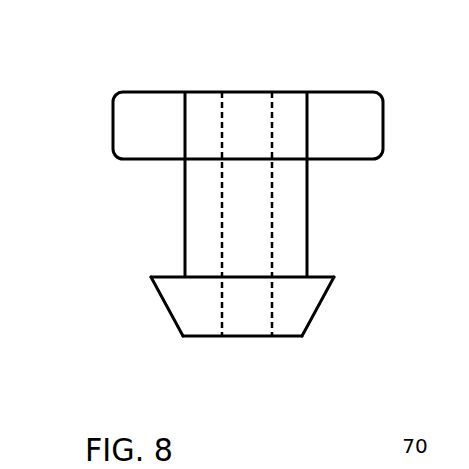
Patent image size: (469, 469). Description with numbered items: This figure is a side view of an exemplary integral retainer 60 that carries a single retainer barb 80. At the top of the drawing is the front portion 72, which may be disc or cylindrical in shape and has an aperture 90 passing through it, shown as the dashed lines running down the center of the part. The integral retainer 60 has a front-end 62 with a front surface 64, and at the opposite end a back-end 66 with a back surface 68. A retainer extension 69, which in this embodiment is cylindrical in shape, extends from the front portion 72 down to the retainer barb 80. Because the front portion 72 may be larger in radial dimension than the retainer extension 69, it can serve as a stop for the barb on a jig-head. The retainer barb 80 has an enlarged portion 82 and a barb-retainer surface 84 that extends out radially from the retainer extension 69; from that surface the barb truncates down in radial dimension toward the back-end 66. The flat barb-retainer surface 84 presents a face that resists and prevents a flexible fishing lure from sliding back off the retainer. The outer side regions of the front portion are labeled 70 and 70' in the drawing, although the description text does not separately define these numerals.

The integral retainer 60 is at (118, 65).
The front-end 62 is at (152, 92).
The front surface 64 is at (332, 90).
The back-end 66 is at (282, 338).
The back surface 68 is at (201, 342).
The retainer extension 69 is at (290, 210).
The head left wing 70 is at (111, 125).
The head right wing 70' is at (387, 124).
The front portion 72 is at (373, 143).
The retainer barb 80 is at (300, 303).
The enlarged portion 82 is at (333, 275).
The barb-retainer surface 84 is at (159, 273).
The aperture 90 is at (252, 104).